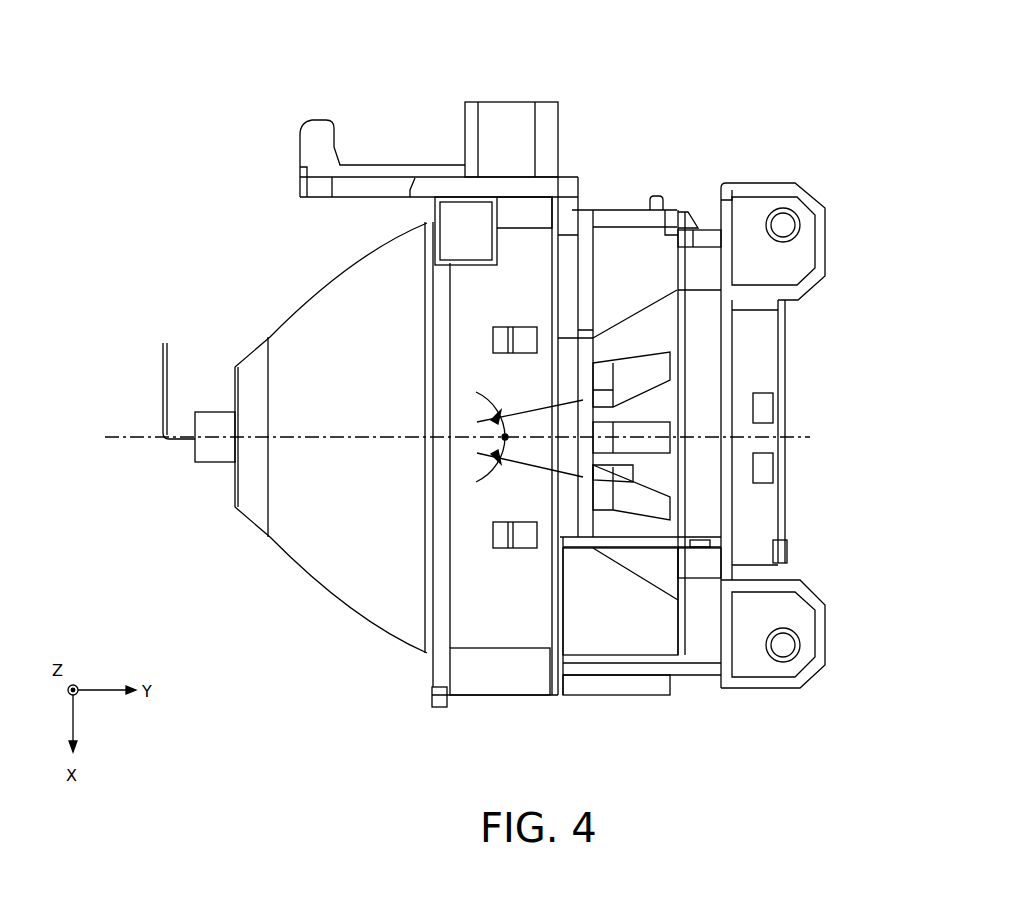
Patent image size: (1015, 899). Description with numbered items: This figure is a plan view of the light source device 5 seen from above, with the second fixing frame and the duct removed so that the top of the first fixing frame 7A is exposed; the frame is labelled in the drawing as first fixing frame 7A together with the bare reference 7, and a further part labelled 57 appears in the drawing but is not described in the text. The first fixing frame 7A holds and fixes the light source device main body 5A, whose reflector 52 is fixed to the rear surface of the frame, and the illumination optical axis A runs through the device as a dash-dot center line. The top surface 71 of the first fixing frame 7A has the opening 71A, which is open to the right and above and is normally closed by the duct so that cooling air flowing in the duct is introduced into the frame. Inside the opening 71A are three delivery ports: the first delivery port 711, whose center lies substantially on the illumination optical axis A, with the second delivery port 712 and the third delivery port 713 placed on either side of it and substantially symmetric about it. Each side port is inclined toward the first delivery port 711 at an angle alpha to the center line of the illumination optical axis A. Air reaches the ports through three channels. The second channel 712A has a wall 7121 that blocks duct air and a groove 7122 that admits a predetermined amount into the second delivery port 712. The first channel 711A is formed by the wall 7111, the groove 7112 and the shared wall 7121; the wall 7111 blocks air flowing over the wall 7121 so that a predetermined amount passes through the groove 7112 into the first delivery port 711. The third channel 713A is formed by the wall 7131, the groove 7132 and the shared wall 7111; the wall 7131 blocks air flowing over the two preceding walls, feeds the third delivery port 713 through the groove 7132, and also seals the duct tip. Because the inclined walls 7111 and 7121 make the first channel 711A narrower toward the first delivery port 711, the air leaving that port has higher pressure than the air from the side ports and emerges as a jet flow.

The light source device 5 is at (695, 81).
The light source device main body 5A is at (281, 585).
The reflector 52 is at (295, 438).
The support member 57 is at (810, 138).
The holding member 7 is at (505, 625).
The first fixing frame 7A is at (446, 434).
The top surface 71 is at (640, 440).
The opening 71A is at (634, 246).
The first delivery port 711 is at (677, 444).
The first channel 711A is at (792, 441).
The wall 7111 is at (655, 510).
The groove 7112 is at (663, 480).
The second delivery port 712 is at (744, 367).
The second channel 712A is at (792, 367).
The wall 7121 is at (667, 393).
The groove 7122 is at (660, 372).
The third delivery port 713 is at (744, 506).
The third channel 713A is at (792, 506).
The wall 7131 is at (650, 530).
The groove 7132 is at (640, 500).
The illumination optical axis A is at (343, 432).